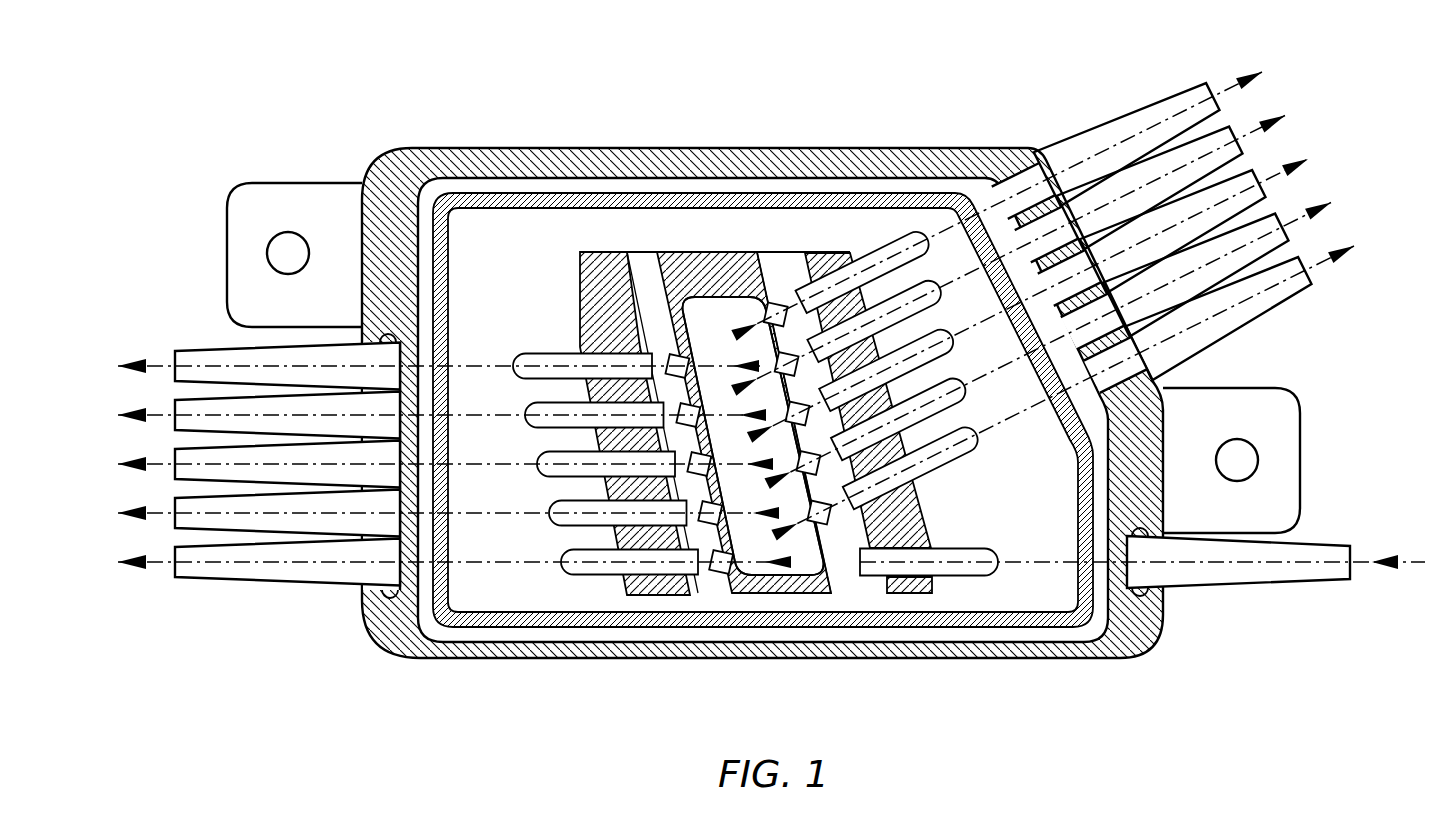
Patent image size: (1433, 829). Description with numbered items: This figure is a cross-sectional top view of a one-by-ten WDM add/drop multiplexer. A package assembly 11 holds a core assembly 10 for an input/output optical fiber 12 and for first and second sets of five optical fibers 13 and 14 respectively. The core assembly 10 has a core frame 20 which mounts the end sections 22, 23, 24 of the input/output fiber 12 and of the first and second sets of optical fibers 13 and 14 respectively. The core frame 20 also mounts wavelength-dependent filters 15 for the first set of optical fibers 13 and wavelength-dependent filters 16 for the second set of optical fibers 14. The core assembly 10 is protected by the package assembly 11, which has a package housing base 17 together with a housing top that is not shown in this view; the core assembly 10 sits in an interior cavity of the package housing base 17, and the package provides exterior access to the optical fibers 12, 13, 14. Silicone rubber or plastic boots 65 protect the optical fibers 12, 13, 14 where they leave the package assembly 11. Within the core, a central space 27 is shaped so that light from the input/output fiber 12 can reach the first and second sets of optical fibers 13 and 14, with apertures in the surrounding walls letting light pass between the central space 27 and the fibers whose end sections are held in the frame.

The core assembly 10 is at (522, 283).
The package assembly 11 is at (758, 115).
The input/output optical fiber 12 is at (1356, 550).
The first set of optical fibers 13 is at (160, 372).
The second set of optical fibers 14 is at (1253, 127).
The wavelength-dependent filters 15 is at (686, 405).
The wavelength-dependent filters 16 is at (795, 362).
The package housing base 17 is at (406, 165).
The core frame 20 is at (703, 250).
The end section 22 is at (948, 552).
The end sections 23 is at (563, 460).
The end sections 24 is at (902, 262).
The central space 27 is at (725, 334).
The boots 65 is at (230, 462).